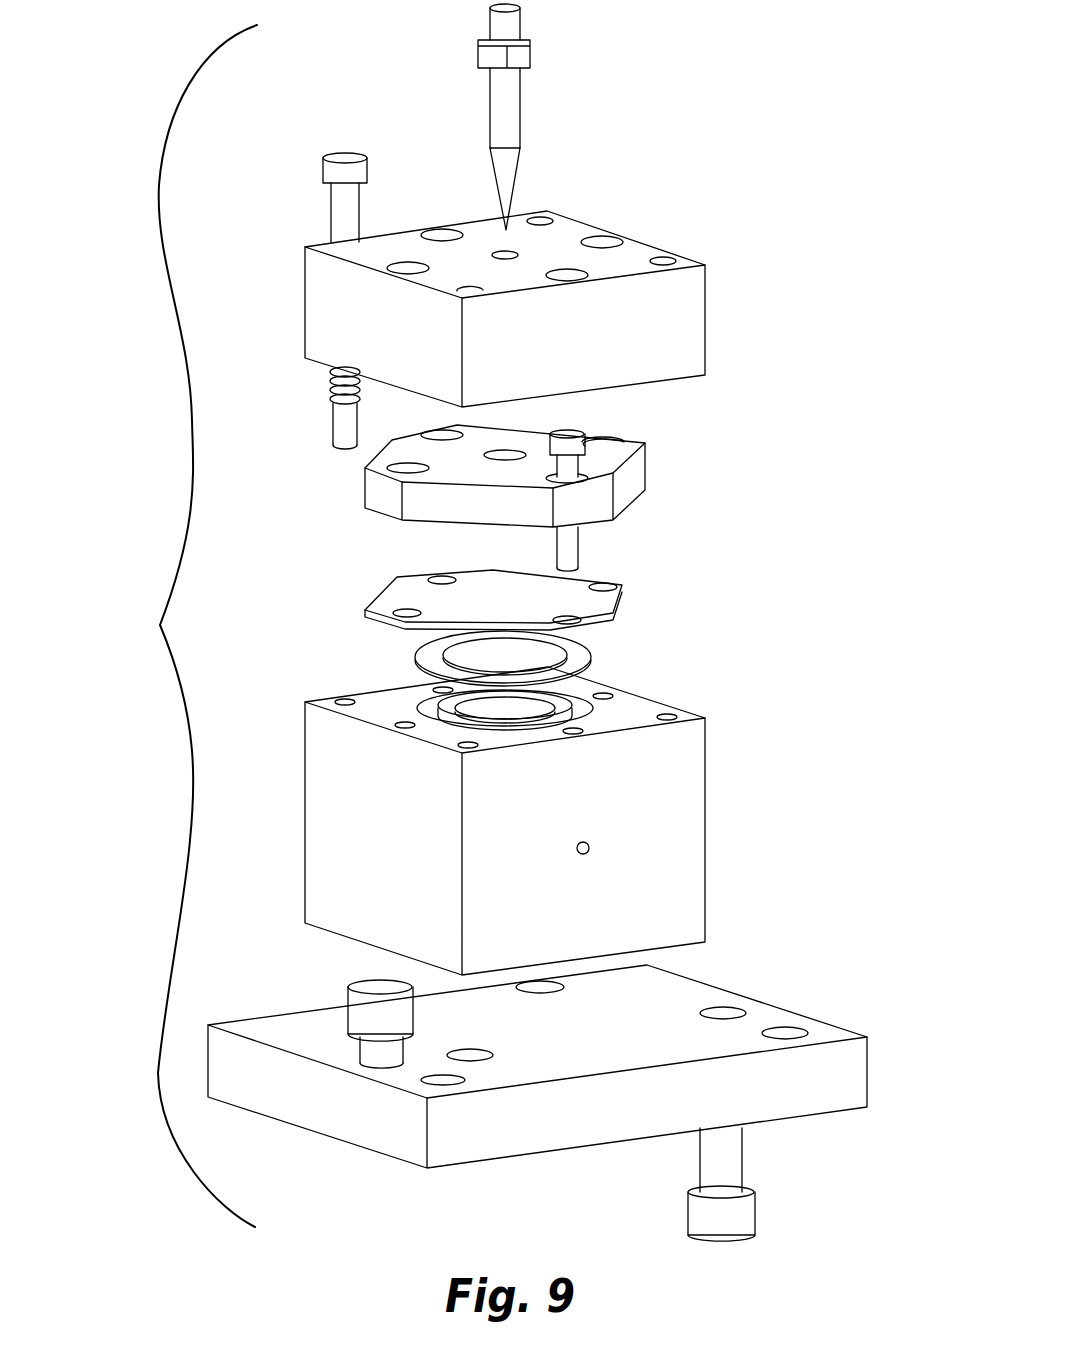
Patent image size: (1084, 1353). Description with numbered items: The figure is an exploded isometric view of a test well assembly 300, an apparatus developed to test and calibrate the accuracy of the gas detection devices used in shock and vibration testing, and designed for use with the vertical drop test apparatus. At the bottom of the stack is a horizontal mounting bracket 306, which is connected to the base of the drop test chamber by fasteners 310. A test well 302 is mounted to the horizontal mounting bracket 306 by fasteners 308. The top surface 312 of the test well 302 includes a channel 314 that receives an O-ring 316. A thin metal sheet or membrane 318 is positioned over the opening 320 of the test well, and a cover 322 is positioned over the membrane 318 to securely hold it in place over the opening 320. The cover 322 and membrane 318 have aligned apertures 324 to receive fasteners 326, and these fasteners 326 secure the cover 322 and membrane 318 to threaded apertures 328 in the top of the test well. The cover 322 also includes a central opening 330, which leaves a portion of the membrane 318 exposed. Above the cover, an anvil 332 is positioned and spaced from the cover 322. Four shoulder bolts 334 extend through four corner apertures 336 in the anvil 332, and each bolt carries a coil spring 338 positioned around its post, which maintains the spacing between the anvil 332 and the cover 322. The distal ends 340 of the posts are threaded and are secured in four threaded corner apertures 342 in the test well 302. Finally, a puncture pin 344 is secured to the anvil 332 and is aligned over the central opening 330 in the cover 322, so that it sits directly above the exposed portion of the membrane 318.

The test well assembly 300 is at (176, 626).
The test well 302 is at (648, 873).
The horizontal mounting bracket 306 is at (827, 1025).
The fasteners 308 is at (745, 1212).
The fasteners 310 is at (362, 1010).
The top surface 312 is at (380, 710).
The channel 314 is at (438, 717).
The O-ring 316 is at (587, 655).
The membrane 318 is at (643, 592).
The opening 320 is at (508, 713).
The cover 322 is at (633, 477).
The aligned apertures 324 is at (404, 468).
The fasteners 326 is at (570, 438).
The threaded apertures 328 is at (443, 688).
The central opening 330 is at (505, 455).
The anvil 332 is at (690, 303).
The shoulder bolts 334 is at (347, 210).
The corner apertures 336 is at (545, 220).
The coil spring 338 is at (330, 382).
The distal ends 340 is at (343, 442).
The threaded corner apertures 342 is at (345, 702).
The puncture pin 344 is at (508, 89).